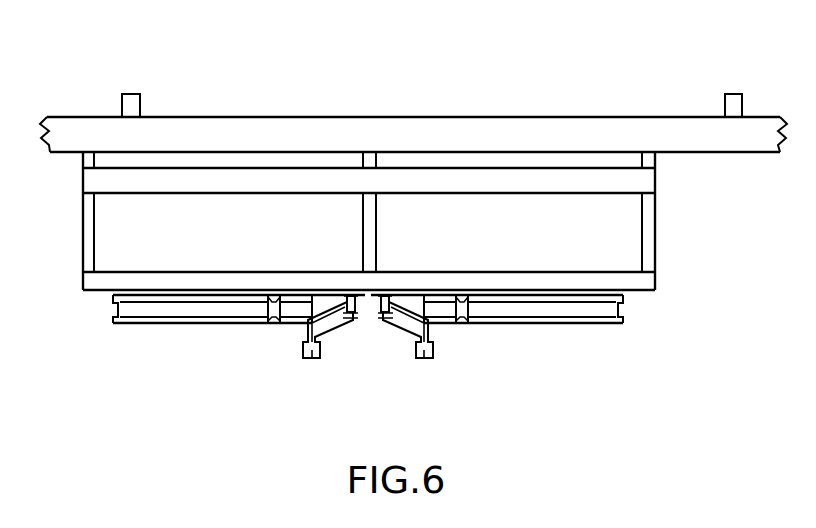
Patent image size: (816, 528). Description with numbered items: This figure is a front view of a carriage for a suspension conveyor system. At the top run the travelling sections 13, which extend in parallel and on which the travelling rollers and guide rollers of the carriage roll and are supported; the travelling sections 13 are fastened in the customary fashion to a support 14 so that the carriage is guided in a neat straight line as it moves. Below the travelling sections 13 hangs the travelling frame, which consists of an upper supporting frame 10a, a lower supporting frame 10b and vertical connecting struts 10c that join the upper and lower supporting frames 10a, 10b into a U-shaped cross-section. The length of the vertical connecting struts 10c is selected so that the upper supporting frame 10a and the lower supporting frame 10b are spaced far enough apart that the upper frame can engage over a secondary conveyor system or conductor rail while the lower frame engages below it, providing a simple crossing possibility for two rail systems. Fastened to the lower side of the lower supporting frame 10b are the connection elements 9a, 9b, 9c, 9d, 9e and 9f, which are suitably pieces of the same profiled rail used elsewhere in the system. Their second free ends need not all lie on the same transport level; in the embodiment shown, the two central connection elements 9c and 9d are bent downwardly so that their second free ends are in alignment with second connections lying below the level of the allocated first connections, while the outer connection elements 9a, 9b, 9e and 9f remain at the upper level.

The travelling sections 13 is at (80, 135).
The support 14 is at (127, 110).
The upper supporting frame 10a is at (632, 180).
The lower supporting frame 10b is at (642, 279).
The vertical connecting struts 10c is at (88, 230).
The connection element 9a is at (550, 307).
The connection element 9b is at (445, 307).
The central connection element 9c is at (426, 362).
The central connection element 9d is at (311, 362).
The connection element 9e is at (292, 308).
The connection element 9f is at (192, 307).